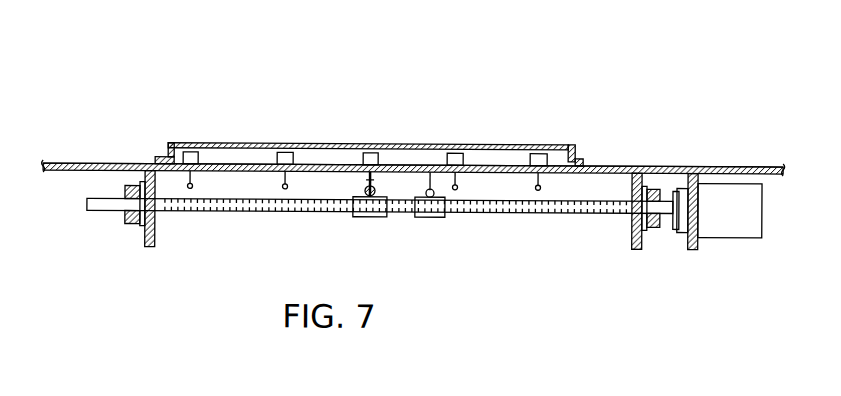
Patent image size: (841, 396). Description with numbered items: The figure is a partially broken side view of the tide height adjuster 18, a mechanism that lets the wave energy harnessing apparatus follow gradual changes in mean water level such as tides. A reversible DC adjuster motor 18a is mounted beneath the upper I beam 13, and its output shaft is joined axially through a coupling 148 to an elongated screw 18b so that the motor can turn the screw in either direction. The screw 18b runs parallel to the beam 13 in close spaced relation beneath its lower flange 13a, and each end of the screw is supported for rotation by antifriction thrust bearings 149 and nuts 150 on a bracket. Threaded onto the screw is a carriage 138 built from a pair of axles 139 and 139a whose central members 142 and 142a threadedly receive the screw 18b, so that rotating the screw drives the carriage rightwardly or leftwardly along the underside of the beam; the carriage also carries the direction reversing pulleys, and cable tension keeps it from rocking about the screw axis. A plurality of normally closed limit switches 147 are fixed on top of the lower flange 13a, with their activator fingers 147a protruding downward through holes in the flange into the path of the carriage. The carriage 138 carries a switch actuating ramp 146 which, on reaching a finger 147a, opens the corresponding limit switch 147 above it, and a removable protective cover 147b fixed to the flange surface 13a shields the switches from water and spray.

The upper beam 13 is at (687, 160).
The lower flange 13a is at (715, 167).
The tide height adjuster 18 is at (436, 252).
The adjuster motor 18a is at (750, 207).
The screw 18b is at (272, 214).
The carriage 138 is at (403, 241).
The axle 139 is at (378, 193).
The axle 139a is at (432, 172).
The central member 142 is at (355, 216).
The central member 142a is at (470, 229).
The switch actuating ramp 146 is at (366, 189).
The limit switch 147 is at (455, 160).
The activator finger 147a is at (456, 184).
The protective cover 147b is at (213, 143).
The coupling 148 is at (683, 232).
The antifriction thrust bearing 149 is at (145, 240).
The nut 150 is at (130, 226).